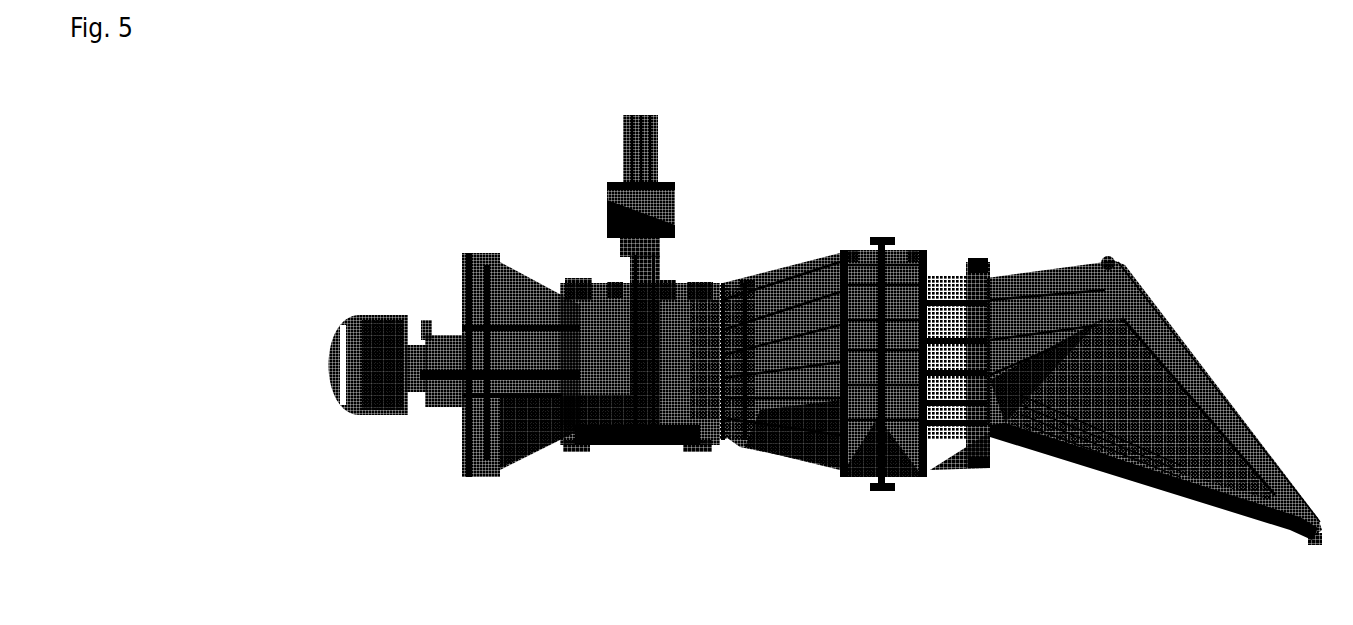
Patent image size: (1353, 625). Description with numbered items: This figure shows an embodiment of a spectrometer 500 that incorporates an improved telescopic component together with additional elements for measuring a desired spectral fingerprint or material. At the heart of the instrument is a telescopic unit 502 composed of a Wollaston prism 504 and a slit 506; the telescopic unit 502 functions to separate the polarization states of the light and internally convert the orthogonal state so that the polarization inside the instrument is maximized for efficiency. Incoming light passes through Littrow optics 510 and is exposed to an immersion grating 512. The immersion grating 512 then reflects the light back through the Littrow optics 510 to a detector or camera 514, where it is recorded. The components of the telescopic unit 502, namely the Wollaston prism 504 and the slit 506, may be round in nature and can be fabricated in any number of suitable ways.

The spectrometer 500 is at (222, 182).
The telescopic unit 502 is at (582, 207).
The Wollaston prism 504 is at (625, 207).
The slit 506 is at (632, 323).
The Littrow optics 510 is at (853, 230).
The immersion grating 512 is at (1117, 300).
The detector or camera 514 is at (442, 300).